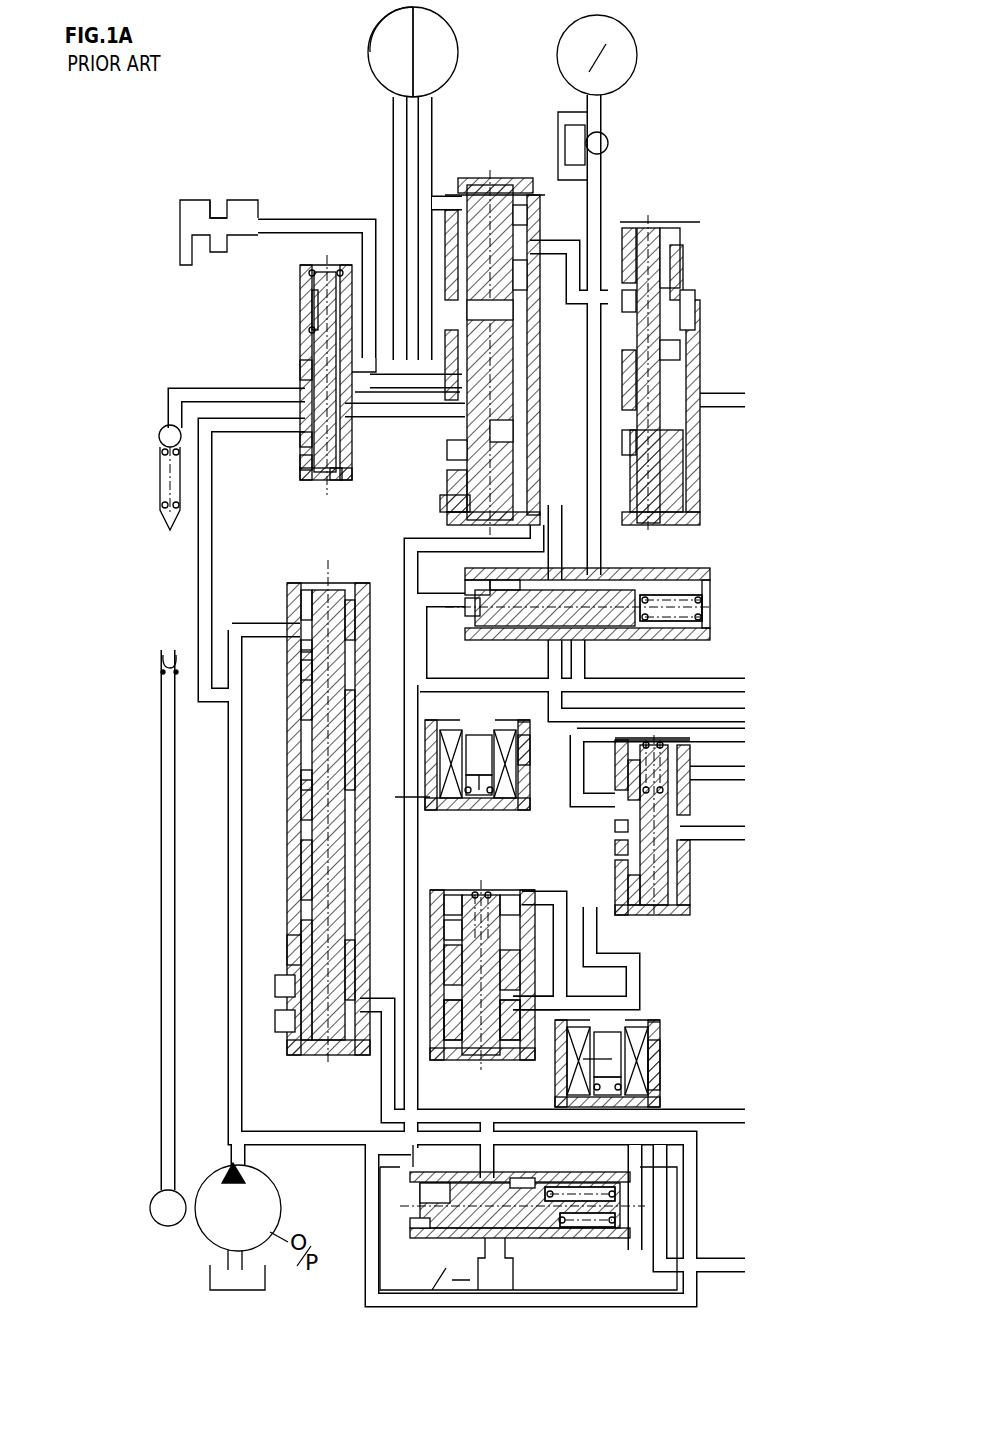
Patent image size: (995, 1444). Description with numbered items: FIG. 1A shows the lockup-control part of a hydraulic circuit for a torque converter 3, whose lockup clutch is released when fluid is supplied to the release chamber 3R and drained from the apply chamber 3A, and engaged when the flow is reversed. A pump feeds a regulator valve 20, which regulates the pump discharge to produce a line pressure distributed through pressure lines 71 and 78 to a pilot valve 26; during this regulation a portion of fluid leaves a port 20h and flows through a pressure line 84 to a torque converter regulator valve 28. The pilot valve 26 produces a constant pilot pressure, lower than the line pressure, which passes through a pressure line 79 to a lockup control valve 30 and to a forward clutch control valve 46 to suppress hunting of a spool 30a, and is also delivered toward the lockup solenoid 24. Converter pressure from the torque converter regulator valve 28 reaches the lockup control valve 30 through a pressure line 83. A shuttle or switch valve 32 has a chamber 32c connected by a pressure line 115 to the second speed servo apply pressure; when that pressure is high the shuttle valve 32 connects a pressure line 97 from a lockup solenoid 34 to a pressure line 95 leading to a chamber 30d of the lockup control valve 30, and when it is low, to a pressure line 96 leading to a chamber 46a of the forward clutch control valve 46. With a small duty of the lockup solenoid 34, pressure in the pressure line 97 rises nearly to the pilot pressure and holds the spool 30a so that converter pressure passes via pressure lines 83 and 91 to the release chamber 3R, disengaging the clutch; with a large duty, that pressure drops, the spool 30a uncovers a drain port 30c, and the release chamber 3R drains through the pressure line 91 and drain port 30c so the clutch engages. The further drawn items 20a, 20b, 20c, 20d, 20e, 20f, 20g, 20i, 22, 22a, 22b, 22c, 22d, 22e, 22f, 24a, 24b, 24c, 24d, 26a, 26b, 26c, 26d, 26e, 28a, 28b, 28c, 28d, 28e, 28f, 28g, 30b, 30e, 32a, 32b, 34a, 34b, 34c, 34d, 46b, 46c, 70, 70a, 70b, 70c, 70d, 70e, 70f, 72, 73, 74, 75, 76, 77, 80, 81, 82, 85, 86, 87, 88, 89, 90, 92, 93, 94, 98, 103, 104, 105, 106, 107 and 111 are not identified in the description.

The torque converter 3 is at (372, 36).
The apply chamber 3A is at (460, 74).
The release chamber 3R is at (372, 82).
The regulator valve 20 is at (288, 575).
The valve port 20a is at (300, 862).
The valve port 20b is at (300, 585).
The valve port 20c is at (300, 955).
The valve port 20d is at (350, 610).
The valve port 20e is at (296, 760).
The valve port 20f is at (296, 685).
The valve port 20g is at (298, 655).
The port 20h is at (300, 800).
The valve port 20i is at (355, 960).
The control valve 22 is at (478, 1062).
The valve port 22a is at (500, 890).
The valve port 22b is at (458, 890).
The valve port 22c is at (450, 985).
The valve port 22d is at (462, 1015).
The valve port 22e is at (445, 935).
The valve port 22f is at (490, 1040).
The lockup solenoid 24 is at (650, 1018).
The solenoid valve port 24a is at (660, 1064).
The solenoid plunger 24b is at (604, 1048).
The solenoid valve port 24c is at (660, 1045).
The solenoid valve port 24d is at (625, 1092).
The pilot valve 26 is at (560, 1250).
The valve port 26a is at (600, 1183).
The valve spring 26b is at (545, 1188).
The valve port 26c is at (420, 1232).
The valve port 26d is at (540, 1180).
The valve port 26e is at (438, 1183).
The torque converter regulator valve 28 is at (285, 462).
The valve port 28a is at (300, 272).
The valve land 28b is at (310, 325).
The valve port 28c is at (302, 385).
The valve port 28d is at (304, 438).
The valve port 28e is at (305, 352).
The valve port 28f is at (305, 470).
The valve port 28g is at (342, 470).
The lockup control valve 30 is at (470, 158).
The spool 30a is at (455, 498).
The valve port 30b is at (528, 220).
The drain port 30c is at (450, 470).
The chamber 30d is at (448, 505).
The valve end cap 30e is at (478, 180).
The shuttle valve 32 is at (640, 578).
The valve spring 32a is at (690, 628).
The valve port 32b is at (475, 595).
The chamber 32c is at (478, 602).
The lockup solenoid 34 is at (455, 812).
The solenoid valve port 34a is at (528, 752).
The solenoid plunger 34b is at (450, 788).
The solenoid valve port 34c is at (530, 722).
The drain line 34d is at (425, 797).
The forward clutch control valve 46 is at (640, 200).
The chamber 46a is at (640, 505).
The valve port 46b is at (685, 270).
The valve port 46c is at (618, 452).
The accumulator control valve 70 is at (700, 925).
The valve port 70a is at (640, 760).
The valve land 70b is at (630, 790).
The valve land 70c is at (625, 900).
The valve port 70d is at (612, 828).
The valve port 70e is at (612, 848).
The valve port 70f is at (685, 765).
The pressure line 71 is at (226, 918).
The oil line 72 is at (262, 624).
The check valve 73 is at (177, 549).
The oil line 74 is at (176, 962).
The oil strainer 75 is at (178, 1190).
The oil line 76 is at (372, 1050).
The oil line 77 is at (380, 1110).
The pressure line 78 is at (570, 790).
The pressure line 79 is at (404, 888).
The oil line 80 is at (590, 1000).
The oil line 81 is at (640, 958).
The oil line 82 is at (170, 400).
The pressure line 83 is at (392, 415).
The pressure line 84 is at (198, 583).
The oil line 85 is at (388, 356).
The oil line 86 is at (400, 388).
The oil line 87 is at (372, 417).
The oil line 88 is at (325, 218).
The shift position indicator 89 is at (258, 212).
The shift position indicator 90 is at (178, 215).
The pressure line 91 is at (394, 160).
The oil line 92 is at (445, 198).
The oil line 93 is at (433, 112).
The oil line 94 is at (538, 248).
The pressure line 95 is at (525, 572).
The pressure line 96 is at (606, 548).
The pressure line 97 is at (582, 708).
The oil line 98 is at (440, 700).
The oil line 103 is at (612, 290).
The oil line 104 is at (630, 360).
The oil line 105 is at (682, 318).
The oil line 106 is at (735, 406).
The forward clutch 107 is at (615, 135).
The oil line 111 is at (738, 828).
The pressure line 115 is at (655, 676).